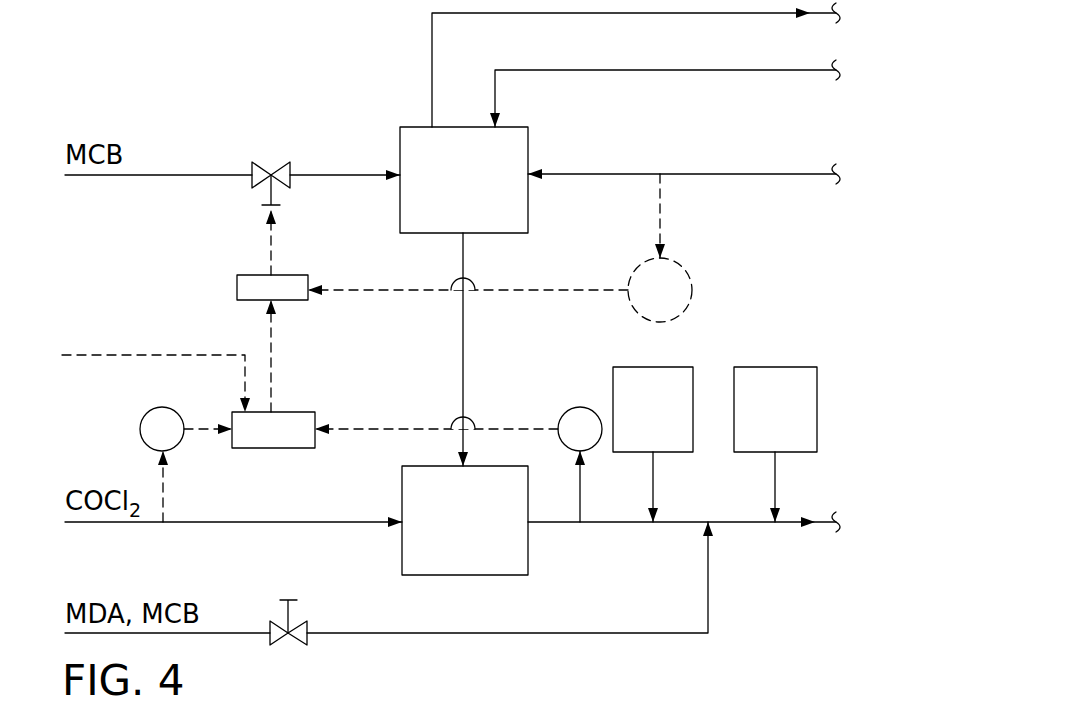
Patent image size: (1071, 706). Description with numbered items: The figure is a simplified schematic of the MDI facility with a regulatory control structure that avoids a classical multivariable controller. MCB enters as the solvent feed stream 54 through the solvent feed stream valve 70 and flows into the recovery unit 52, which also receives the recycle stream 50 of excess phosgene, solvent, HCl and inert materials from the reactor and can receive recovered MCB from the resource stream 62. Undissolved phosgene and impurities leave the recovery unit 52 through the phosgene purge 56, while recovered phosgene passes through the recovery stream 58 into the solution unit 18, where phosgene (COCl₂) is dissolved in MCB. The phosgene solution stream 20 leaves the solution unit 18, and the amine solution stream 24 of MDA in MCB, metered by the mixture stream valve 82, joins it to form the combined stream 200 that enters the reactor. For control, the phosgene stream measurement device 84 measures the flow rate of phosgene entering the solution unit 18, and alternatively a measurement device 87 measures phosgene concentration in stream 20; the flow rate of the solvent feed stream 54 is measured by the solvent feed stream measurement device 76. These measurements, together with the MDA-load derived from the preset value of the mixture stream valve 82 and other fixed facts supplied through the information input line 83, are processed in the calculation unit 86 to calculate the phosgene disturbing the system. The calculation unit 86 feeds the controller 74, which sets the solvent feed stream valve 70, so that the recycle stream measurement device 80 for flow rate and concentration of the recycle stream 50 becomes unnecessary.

The solution unit 18 is at (465, 520).
The phosgene solution stream 20 is at (653, 444).
The combined stream 200 is at (775, 444).
The amine solution stream 24 is at (708, 600).
The recycle stream 50 is at (720, 174).
The recovery unit 52 is at (464, 180).
The solvent feed stream 54 is at (170, 175).
The phosgene purge 56 is at (693, 13).
The recovery stream 58 is at (463, 367).
The resource stream 62 is at (715, 70).
The solvent feed stream valve 70 is at (262, 166).
The controller 74 is at (245, 275).
The solvent feed stream measurement device 76 is at (240, 523).
The recycle stream measurement device 80 is at (692, 282).
The mixture stream valve 82 is at (305, 622).
The information input line 83 is at (142, 355).
The phosgene stream measurement device 84 is at (141, 436).
The calculation unit 86 is at (308, 412).
The measurement device 87 is at (560, 414).